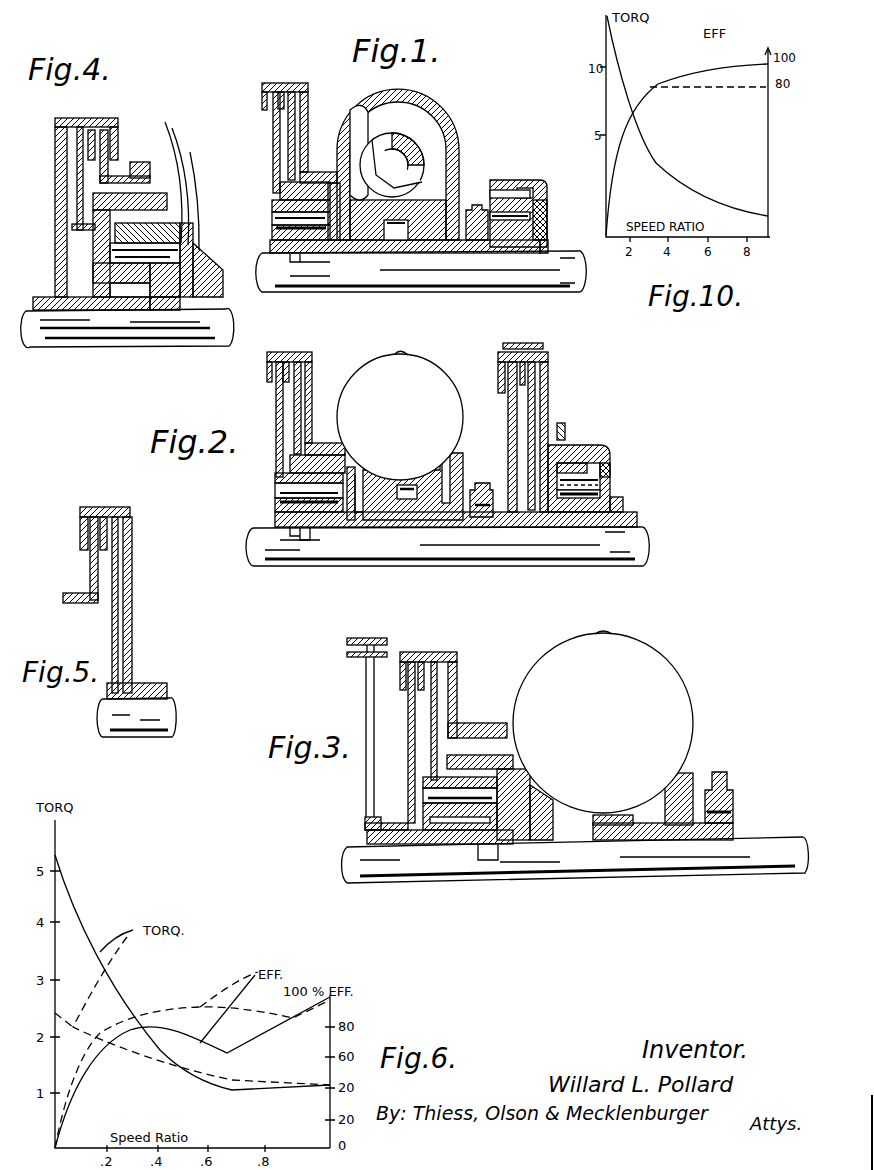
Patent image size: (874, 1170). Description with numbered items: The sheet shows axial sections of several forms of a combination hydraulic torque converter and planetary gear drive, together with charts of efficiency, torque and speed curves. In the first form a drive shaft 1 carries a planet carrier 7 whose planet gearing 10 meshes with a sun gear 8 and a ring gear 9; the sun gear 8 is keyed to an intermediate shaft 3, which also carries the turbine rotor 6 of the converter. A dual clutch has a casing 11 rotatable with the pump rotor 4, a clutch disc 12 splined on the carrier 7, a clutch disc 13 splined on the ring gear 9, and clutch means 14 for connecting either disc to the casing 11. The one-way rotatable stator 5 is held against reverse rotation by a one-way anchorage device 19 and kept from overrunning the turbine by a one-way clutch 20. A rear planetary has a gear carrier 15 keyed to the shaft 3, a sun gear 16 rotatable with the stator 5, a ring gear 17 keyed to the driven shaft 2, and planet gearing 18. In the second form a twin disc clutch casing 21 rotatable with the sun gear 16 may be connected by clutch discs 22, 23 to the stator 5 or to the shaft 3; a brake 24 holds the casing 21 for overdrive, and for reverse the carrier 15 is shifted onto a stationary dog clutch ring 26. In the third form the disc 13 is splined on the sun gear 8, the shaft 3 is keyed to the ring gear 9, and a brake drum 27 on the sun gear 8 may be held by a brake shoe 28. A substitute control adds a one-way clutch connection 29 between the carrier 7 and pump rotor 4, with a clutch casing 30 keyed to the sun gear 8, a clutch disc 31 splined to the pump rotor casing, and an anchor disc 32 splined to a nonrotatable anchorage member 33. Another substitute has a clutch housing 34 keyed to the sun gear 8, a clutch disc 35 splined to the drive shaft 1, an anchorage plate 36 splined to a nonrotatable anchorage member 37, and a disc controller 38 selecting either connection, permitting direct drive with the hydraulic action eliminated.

In FIG. 1, the drive shaft 1 is at (278, 290).
In FIG. 2, the drive shaft 1 is at (272, 562).
In FIG. 5, the drive shaft 1 is at (145, 738).
In FIG. 3, the drive shaft 1 is at (400, 880).
In FIG. 1, the driven shaft 2 is at (576, 283).
In FIG. 2, the driven shaft 2 is at (615, 556).
In FIG. 4, the intermediate shaft 3 is at (150, 322).
In FIG. 1, the intermediate shaft 3 is at (450, 292).
In FIG. 2, the intermediate shaft 3 is at (452, 566).
In FIG. 3, the intermediate shaft 3 is at (580, 878).
In FIG. 4, the pump rotor 4 is at (165, 124).
In FIG. 1, the pump rotor 4 is at (345, 120).
In FIG. 2, the pump rotor 4 is at (398, 356).
In FIG. 3, the pump rotor 4 is at (548, 645).
In FIG. 1, the one-way rotatable stator 5 is at (448, 124).
In FIG. 2, the one-way rotatable stator 5 is at (414, 480).
In FIG. 3, the one-way rotatable stator 5 is at (585, 812).
In FIG. 4, the turbine rotor 6 is at (188, 200).
In FIG. 1, the turbine rotor 6 is at (415, 170).
In FIG. 2, the turbine rotor 6 is at (348, 420).
In FIG. 3, the turbine rotor 6 is at (520, 705).
In FIG. 4, the planet carrier 7 is at (105, 284).
In FIG. 1, the planet carrier 7 is at (272, 234).
In FIG. 2, the planet carrier 7 is at (276, 510).
In FIG. 3, the planet carrier 7 is at (505, 780).
In FIG. 4, the sun gear 8 is at (70, 310).
In FIG. 1, the sun gear 8 is at (312, 262).
In FIG. 2, the sun gear 8 is at (318, 530).
In FIG. 5, the sun gear 8 is at (166, 688).
In FIG. 3, the sun gear 8 is at (452, 846).
In FIG. 4, the ring gear 9 is at (160, 233).
In FIG. 1, the ring gear 9 is at (290, 192).
In FIG. 2, the ring gear 9 is at (290, 463).
In FIG. 3, the ring gear 9 is at (468, 757).
In FIG. 4, the planet gearing 10 is at (93, 252).
In FIG. 1, the planet gearing 10 is at (272, 218).
In FIG. 2, the planet gearing 10 is at (275, 490).
In FIG. 3, the planet gearing 10 is at (366, 824).
In FIG. 1, the clutch casing 11 is at (304, 85).
In FIG. 2, the clutch casing 11 is at (312, 372).
In FIG. 3, the clutch casing 11 is at (458, 668).
In FIG. 1, the clutch disc 12 is at (273, 126).
In FIG. 2, the clutch disc 12 is at (276, 393).
In FIG. 3, the clutch disc 12 is at (415, 702).
In FIG. 1, the clutch disc 13 is at (296, 135).
In FIG. 2, the clutch disc 13 is at (302, 405).
In FIG. 3, the clutch disc 13 is at (431, 735).
In FIG. 1, the clutch means 14 is at (276, 87).
In FIG. 2, the clutch means 14 is at (270, 359).
In FIG. 3, the clutch means 14 is at (436, 655).
In FIG. 1, the gear carrier 15 is at (548, 200).
In FIG. 2, the gear carrier 15 is at (562, 443).
In FIG. 1, the sun gear 16 is at (500, 253).
In FIG. 2, the sun gear 16 is at (574, 527).
In FIG. 1, the ring gear 17 is at (512, 185).
In FIG. 2, the ring gear 17 is at (590, 447).
In FIG. 1, the planet gearing 18 is at (534, 195).
In FIG. 2, the planet gearing 18 is at (614, 497).
In FIG. 1, the one-way anchorage device 19 is at (478, 212).
In FIG. 2, the one-way anchorage device 19 is at (484, 520).
In FIG. 3, the one-way anchorage device 19 is at (735, 800).
In FIG. 1, the one-way clutch 20 is at (408, 242).
In FIG. 2, the one-way clutch 20 is at (406, 500).
In FIG. 2, the clutch casing 21 is at (548, 362).
In FIG. 2, the clutch disc 22 is at (508, 418).
In FIG. 2, the clutch disc 23 is at (535, 405).
In FIG. 2, the brake 24 is at (545, 346).
In FIG. 2, the stationary dog clutch ring 26 is at (565, 430).
In FIG. 3, the brake drum 27 is at (366, 676).
In FIG. 3, the brake shoe 28 is at (385, 641).
In FIG. 4, the one-way clutch connection 29 is at (93, 268).
In FIG. 4, the clutch casing 30 is at (100, 120).
In FIG. 4, the clutch disc 31 is at (77, 184).
In FIG. 4, the anchor disc 32 is at (108, 145).
In FIG. 4, the nonrotatable anchorage member 33 is at (130, 168).
In FIG. 5, the clutch housing 34 is at (132, 535).
In FIG. 5, the clutch disc 35 is at (118, 598).
In FIG. 5, the anchorage plate 36 is at (90, 567).
In FIG. 5, the nonrotatable anchorage member 37 is at (75, 604).
In FIG. 5, the disc controller 38 is at (112, 508).